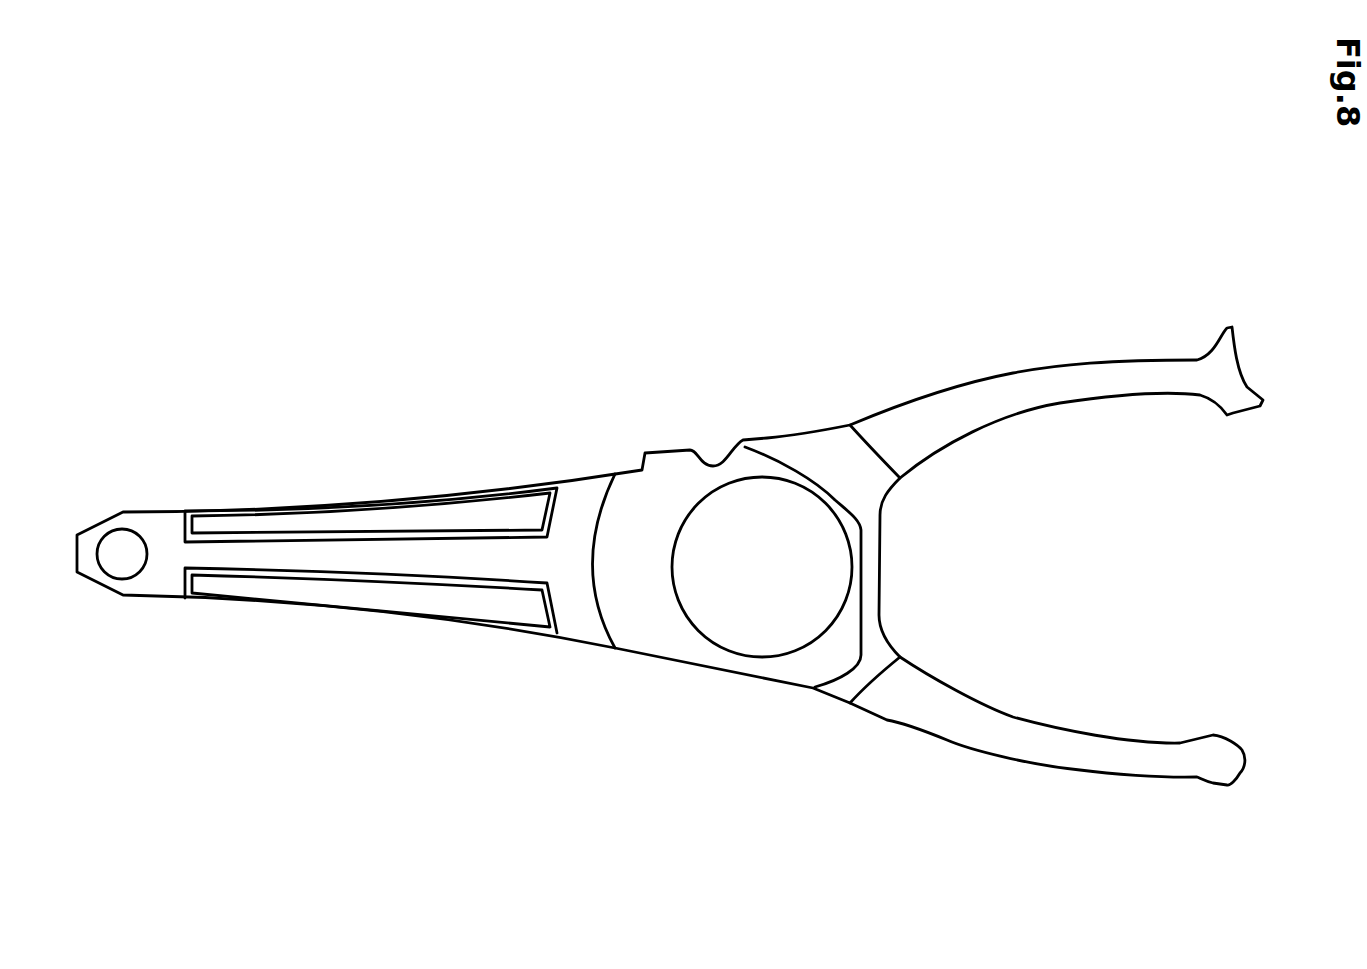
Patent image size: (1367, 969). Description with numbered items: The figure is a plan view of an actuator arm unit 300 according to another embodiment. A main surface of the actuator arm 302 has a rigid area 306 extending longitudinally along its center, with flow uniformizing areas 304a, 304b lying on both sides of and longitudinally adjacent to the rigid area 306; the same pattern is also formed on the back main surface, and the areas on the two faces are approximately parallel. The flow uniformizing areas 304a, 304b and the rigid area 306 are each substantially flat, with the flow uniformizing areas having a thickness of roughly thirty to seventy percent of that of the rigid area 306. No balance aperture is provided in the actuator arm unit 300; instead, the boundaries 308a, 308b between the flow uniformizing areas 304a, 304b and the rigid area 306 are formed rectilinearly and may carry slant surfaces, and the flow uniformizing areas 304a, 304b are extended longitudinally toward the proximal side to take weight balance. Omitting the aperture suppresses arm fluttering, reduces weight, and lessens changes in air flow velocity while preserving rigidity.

The actuator arm unit 300 is at (670, 618).
The actuator arm 302 is at (403, 487).
The flow uniformizing area 304a is at (342, 593).
The flow uniformizing area 304b is at (293, 522).
The rigid area 306 is at (303, 551).
The boundary 308a is at (407, 578).
The boundary 308b is at (350, 540).